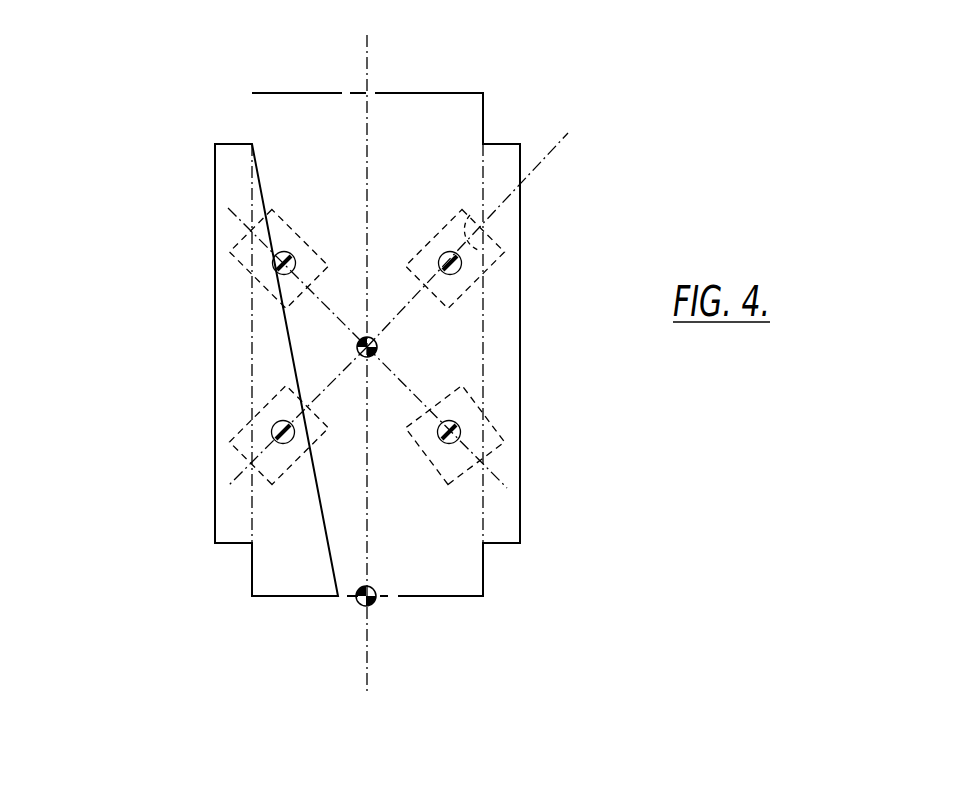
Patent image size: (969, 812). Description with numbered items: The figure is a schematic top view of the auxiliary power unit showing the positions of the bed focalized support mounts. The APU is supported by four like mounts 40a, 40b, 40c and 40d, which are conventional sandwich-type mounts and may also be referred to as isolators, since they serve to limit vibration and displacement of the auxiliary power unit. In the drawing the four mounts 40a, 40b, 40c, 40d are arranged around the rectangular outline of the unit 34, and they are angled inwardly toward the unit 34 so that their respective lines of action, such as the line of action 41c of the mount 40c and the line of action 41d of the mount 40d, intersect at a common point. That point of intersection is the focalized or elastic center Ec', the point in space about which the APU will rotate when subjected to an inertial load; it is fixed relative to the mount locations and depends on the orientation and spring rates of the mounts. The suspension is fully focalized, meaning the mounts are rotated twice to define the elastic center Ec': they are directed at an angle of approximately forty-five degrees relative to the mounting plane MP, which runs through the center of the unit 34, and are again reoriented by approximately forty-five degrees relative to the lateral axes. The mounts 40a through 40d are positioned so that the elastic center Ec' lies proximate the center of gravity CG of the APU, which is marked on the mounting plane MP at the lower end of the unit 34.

The unit 34 is at (530, 76).
The mount 40a is at (508, 226).
The mount 40b is at (418, 392).
The mount 40c is at (222, 458).
The mount 40d is at (282, 168).
The line of action 41c is at (312, 393).
The line of action 41d is at (324, 304).
The mounting plane MP is at (325, 143).
The elastic center Ec' is at (305, 310).
The center of gravity CG is at (362, 605).